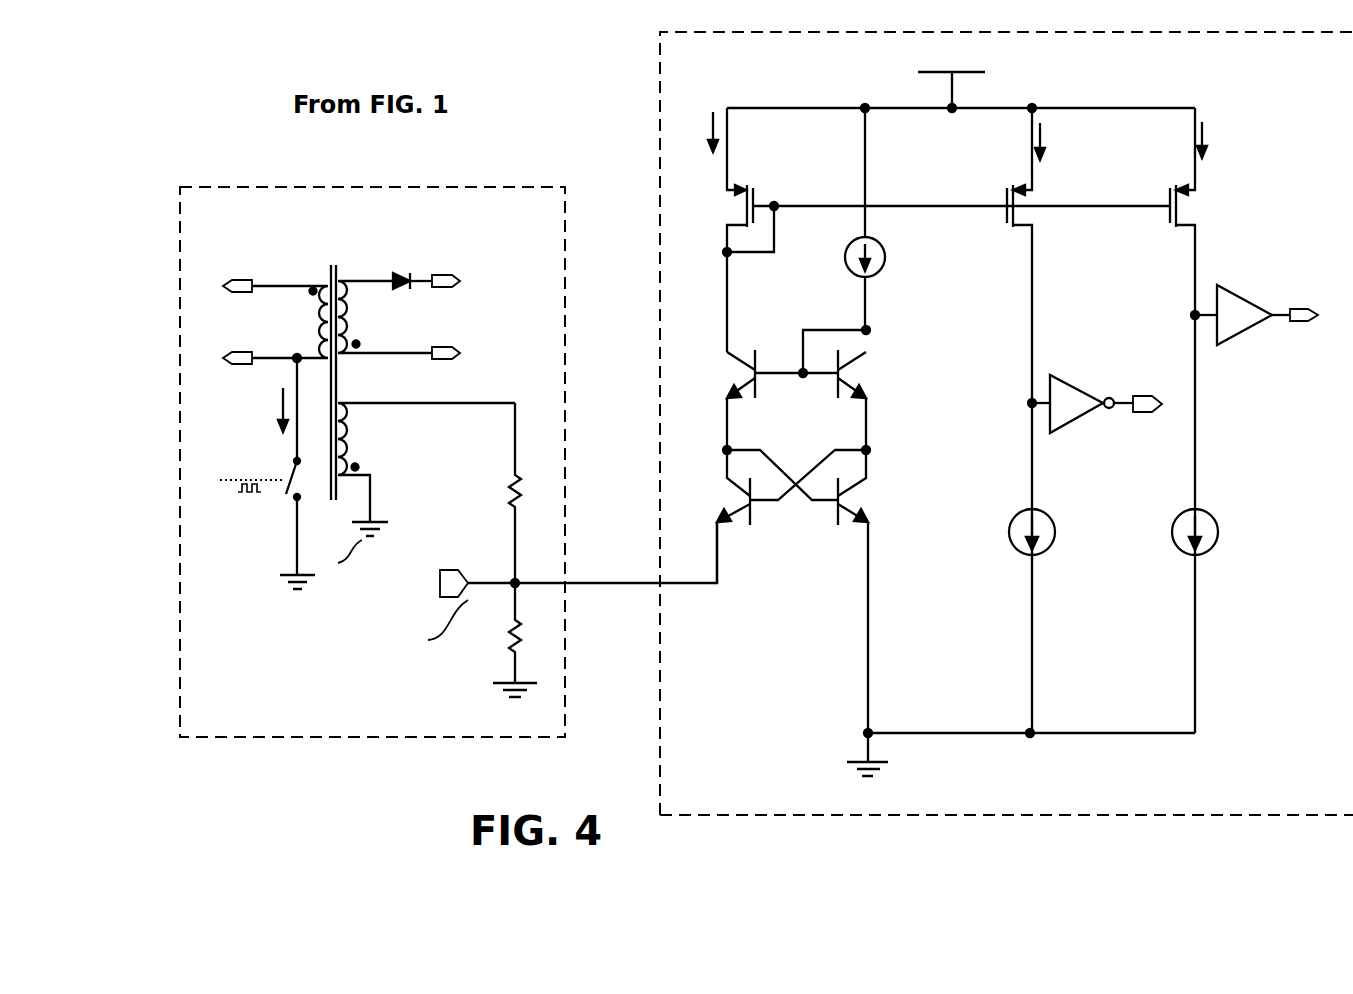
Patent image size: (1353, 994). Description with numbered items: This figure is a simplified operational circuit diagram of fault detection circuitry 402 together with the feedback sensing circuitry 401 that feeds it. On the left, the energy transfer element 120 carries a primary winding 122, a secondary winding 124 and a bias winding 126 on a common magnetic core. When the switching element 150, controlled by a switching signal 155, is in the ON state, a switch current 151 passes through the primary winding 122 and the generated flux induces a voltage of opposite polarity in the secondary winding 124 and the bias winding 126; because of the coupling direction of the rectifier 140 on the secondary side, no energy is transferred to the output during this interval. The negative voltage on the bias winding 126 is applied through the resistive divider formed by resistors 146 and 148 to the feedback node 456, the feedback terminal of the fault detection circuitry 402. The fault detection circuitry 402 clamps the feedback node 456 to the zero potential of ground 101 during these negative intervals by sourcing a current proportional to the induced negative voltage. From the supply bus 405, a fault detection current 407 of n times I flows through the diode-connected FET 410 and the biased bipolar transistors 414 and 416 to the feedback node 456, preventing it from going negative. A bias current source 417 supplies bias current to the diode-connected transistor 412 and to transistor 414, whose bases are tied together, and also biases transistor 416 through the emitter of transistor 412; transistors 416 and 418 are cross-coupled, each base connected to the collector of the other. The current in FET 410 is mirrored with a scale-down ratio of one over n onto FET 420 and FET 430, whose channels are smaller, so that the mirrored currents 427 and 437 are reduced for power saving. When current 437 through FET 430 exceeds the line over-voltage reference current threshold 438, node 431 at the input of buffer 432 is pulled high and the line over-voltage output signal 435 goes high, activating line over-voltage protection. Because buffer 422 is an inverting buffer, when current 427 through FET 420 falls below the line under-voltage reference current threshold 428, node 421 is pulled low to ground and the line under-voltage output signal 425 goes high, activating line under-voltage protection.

The ground reference 101 is at (285, 580).
The energy transfer element 120 is at (340, 262).
The primary winding 122 is at (312, 316).
The secondary winding 124 is at (358, 325).
The bias winding 126 is at (358, 452).
The rectifier 140 is at (403, 270).
The resistor R1 146 is at (547, 470).
The resistor R2 148 is at (547, 622).
The switching element 150 is at (280, 470).
The switch current 151 is at (278, 410).
The switching signal 155 is at (237, 492).
The feedback sensing circuitry 401 is at (300, 183).
The fault detection circuitry 402 is at (652, 103).
The supply bus VDD 405 is at (965, 57).
The fault detection current 407 is at (707, 138).
The FET transistor M1 410 is at (724, 210).
The transistor 412 is at (868, 372).
The transistor 414 is at (722, 376).
The transistor 416 is at (717, 505).
The bias current source Ibias1 417 is at (888, 264).
The transistor 418 is at (870, 503).
The FET transistor M2 420 is at (1037, 219).
The node 421 is at (1027, 398).
The buffer 422 is at (1068, 433).
The output signal LUV 425 is at (1118, 366).
The mirrored current 427 is at (1048, 147).
The reference current threshold of line under voltage IUV 428 is at (1050, 557).
The FET transistor M3 430 is at (1193, 208).
The node 431 is at (1185, 315).
The buffer 432 is at (1237, 342).
The output signal LOV 435 is at (1305, 277).
The mirrored current 437 is at (1213, 143).
The reference current threshold of line over voltage IOV 438 is at (1220, 557).
The node FB 456 is at (612, 556).